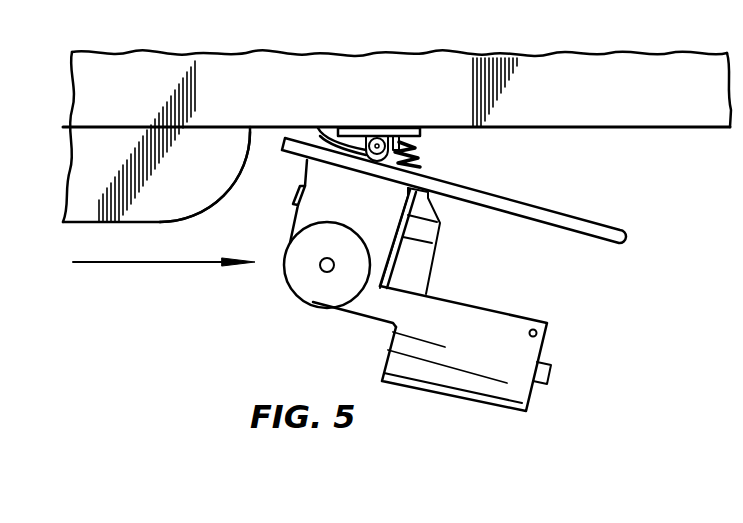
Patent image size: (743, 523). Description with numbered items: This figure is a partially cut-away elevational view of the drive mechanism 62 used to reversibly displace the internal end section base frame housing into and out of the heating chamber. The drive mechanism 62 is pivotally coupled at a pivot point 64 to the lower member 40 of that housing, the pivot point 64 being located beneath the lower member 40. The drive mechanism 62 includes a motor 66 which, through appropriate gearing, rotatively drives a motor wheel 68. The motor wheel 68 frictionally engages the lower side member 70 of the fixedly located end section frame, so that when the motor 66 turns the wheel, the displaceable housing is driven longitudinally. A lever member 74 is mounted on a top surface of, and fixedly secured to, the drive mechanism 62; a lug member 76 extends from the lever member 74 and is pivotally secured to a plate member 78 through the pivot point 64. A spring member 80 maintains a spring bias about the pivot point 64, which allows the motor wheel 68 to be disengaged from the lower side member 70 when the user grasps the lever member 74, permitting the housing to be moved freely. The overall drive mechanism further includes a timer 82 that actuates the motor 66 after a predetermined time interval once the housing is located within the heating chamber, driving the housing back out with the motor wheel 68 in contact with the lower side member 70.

The lower member 40 is at (603, 128).
The drive mechanism 62 is at (437, 283).
The pivot point 64 is at (384, 127).
The motor 66 is at (500, 325).
The motor wheel 68 is at (312, 292).
The lower side member 70 is at (157, 223).
The lever member 74 is at (577, 215).
The lug member 76 is at (320, 130).
The plate member 78 is at (398, 127).
The spring member 80 is at (417, 152).
The timer 82 is at (438, 232).